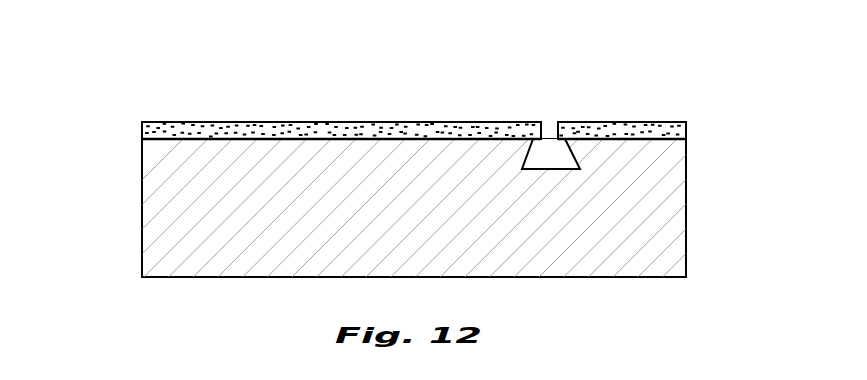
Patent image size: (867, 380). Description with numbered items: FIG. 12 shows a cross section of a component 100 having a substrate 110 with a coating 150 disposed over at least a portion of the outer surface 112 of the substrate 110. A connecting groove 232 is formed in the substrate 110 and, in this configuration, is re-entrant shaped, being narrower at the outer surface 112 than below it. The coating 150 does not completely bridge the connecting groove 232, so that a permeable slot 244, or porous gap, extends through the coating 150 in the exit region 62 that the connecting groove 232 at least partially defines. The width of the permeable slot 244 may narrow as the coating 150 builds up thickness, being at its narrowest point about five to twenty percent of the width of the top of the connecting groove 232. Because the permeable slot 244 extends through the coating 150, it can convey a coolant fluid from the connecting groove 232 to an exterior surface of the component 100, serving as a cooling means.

The component 100 is at (62, 173).
The substrate 110 is at (667, 218).
The outer surface 112 is at (148, 141).
The coating 150 is at (165, 133).
The permeable slot 244 is at (553, 118).
The connecting groove 232 is at (567, 157).
The exit region 62 is at (551, 146).